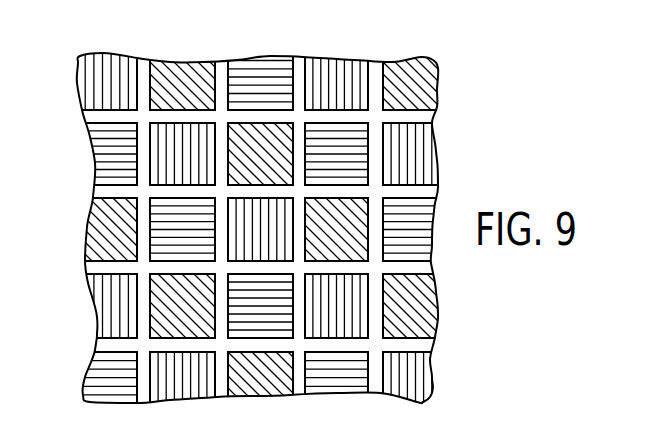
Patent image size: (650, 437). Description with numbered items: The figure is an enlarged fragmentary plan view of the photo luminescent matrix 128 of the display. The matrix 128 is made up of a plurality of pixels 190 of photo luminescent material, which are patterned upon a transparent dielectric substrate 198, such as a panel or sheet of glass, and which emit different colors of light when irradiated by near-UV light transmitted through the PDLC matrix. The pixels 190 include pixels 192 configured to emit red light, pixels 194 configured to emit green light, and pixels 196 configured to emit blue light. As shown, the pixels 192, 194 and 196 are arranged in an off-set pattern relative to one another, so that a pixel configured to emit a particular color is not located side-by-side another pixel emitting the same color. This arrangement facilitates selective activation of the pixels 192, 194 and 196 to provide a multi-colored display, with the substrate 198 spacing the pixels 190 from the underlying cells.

The photo luminescent matrix 128 is at (107, 44).
The pixels 190 is at (267, 55).
The red-emitting pixels 192 is at (163, 67).
The green-emitting pixels 194 is at (177, 150).
The blue-emitting pixels 196 is at (180, 225).
The transparent dielectric substrate 198 is at (222, 65).